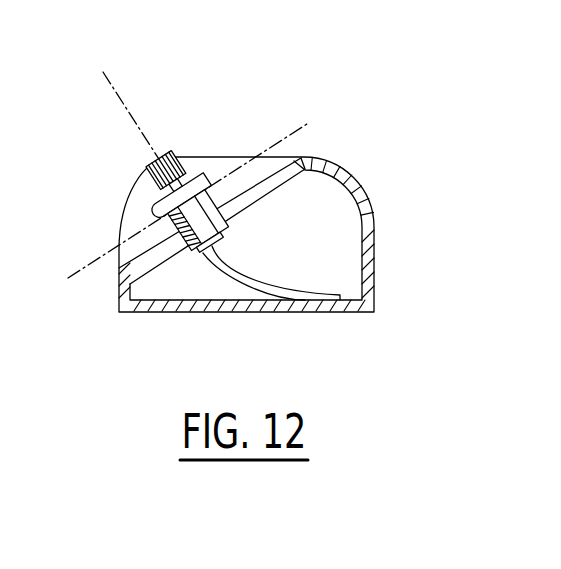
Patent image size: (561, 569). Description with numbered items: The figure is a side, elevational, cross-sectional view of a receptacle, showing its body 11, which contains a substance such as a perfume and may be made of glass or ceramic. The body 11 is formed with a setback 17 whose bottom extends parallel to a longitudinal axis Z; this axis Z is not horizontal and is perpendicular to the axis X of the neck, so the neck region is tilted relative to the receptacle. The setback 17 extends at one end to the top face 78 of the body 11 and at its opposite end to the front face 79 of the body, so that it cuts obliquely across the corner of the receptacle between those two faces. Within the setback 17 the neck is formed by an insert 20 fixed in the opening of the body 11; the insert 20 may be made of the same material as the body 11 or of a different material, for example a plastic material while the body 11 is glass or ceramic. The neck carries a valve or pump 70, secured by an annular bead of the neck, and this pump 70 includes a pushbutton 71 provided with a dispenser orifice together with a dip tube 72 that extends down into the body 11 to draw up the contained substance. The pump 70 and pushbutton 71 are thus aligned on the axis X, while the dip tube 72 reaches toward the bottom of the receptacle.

The body 11 is at (370, 253).
The setback 17 is at (147, 236).
The insert 20 is at (227, 196).
The pump 70 is at (201, 178).
The pushbutton 71 is at (172, 157).
The dip tube 72 is at (247, 277).
The top face 78 is at (290, 157).
The front face 79 is at (118, 268).
The axis of the neck X is at (113, 88).
The longitudinal axis Z is at (80, 268).